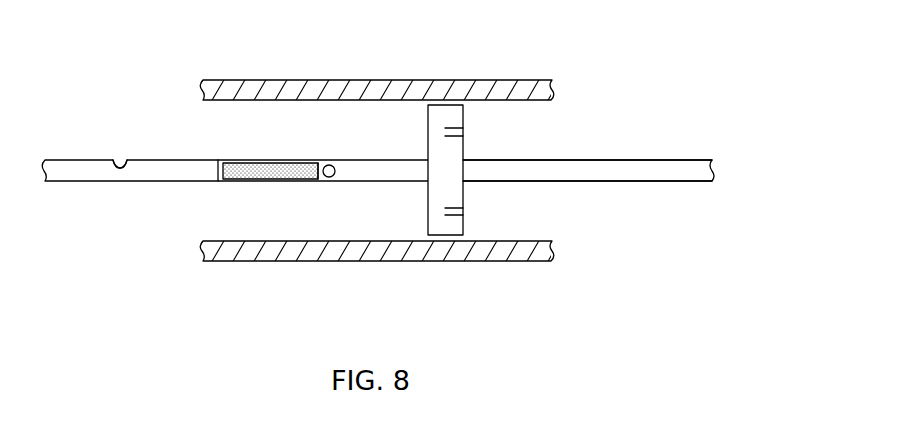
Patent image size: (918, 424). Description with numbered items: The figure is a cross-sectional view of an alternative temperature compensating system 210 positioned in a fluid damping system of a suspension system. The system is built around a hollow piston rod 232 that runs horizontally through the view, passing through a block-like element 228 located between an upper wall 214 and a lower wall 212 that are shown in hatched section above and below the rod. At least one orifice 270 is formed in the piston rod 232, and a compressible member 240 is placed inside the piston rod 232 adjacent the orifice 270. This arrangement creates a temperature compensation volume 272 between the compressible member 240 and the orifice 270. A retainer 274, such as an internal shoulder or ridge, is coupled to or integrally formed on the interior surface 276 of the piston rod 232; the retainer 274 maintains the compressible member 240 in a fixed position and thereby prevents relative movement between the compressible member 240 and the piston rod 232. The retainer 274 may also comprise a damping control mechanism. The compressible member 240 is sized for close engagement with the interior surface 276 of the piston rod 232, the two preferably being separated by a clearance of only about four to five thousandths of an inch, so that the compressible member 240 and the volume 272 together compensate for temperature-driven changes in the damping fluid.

The temperature compensating system 210 is at (188, 197).
The lower wall of lumen 212 is at (318, 268).
The upper wall of lumen 214 is at (282, 73).
The seal / hub block 228 is at (468, 147).
The piston rod 232 is at (660, 160).
The compressible member 240 is at (275, 180).
The orifice 270 is at (336, 165).
The temperature compensation volume 272 is at (318, 182).
The retainer 274 is at (214, 170).
The interior surface 276 is at (119, 165).